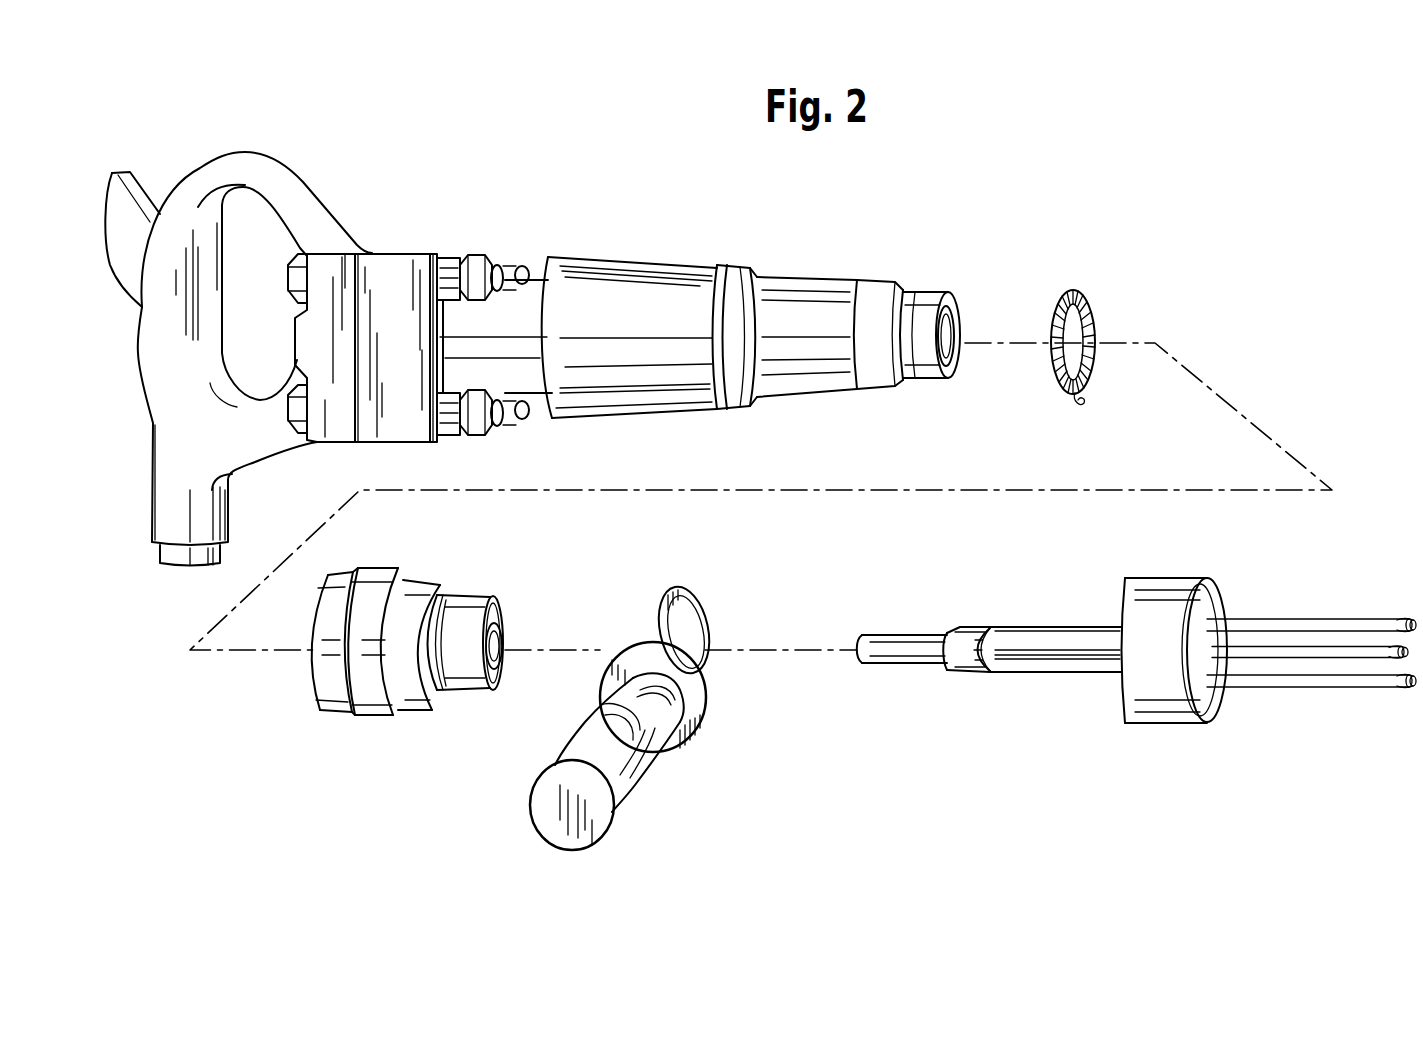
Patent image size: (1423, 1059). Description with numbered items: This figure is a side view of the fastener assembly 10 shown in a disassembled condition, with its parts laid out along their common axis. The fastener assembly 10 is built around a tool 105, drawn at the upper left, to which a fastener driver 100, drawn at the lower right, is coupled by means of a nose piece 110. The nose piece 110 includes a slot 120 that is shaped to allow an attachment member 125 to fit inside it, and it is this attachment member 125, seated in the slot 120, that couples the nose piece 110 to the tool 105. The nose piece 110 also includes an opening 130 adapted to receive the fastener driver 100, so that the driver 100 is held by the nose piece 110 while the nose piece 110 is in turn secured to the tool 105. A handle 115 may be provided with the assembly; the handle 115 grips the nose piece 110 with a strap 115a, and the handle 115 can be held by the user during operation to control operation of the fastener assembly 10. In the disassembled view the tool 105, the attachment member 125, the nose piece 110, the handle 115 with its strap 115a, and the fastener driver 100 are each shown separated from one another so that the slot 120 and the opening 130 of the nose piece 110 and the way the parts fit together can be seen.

The fastener assembly 10 is at (718, 399).
The tool 105 is at (680, 229).
The slot 120 is at (912, 292).
The attachment member 125 is at (1073, 293).
The nose piece 110 is at (441, 609).
The opening 130 is at (505, 645).
The handle 115 is at (655, 700).
The strap 115a is at (690, 586).
The fastener driver 100 is at (1267, 588).